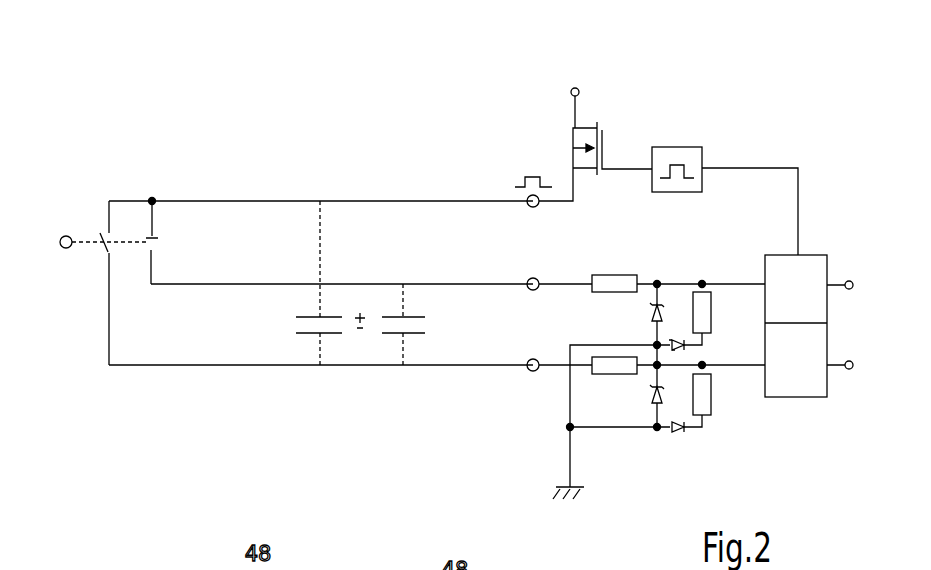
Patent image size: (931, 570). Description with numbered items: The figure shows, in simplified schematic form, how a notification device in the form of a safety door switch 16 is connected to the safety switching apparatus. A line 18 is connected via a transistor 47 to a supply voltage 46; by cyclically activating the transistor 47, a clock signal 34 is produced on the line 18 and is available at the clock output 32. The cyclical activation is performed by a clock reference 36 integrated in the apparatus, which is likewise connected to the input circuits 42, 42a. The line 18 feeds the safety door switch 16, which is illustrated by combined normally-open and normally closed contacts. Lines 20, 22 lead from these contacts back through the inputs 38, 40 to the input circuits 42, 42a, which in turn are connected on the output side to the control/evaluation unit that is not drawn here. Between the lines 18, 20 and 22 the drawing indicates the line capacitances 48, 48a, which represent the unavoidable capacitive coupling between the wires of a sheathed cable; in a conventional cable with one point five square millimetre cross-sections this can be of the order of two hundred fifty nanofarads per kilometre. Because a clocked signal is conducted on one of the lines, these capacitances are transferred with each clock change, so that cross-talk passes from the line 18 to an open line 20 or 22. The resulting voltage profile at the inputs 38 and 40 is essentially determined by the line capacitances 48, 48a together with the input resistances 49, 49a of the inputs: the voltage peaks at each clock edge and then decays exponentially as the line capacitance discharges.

The safety door switch 16 is at (98, 260).
The line 18 is at (241, 201).
The line 20 is at (200, 284).
The line 22 is at (183, 365).
The clock output 32 is at (537, 206).
The clock signal 34 is at (525, 177).
The clock reference 36 is at (683, 147).
The input 38 is at (528, 279).
The input 40 is at (530, 371).
The input circuit 42 is at (800, 373).
The input circuit 42a is at (805, 268).
The supply voltage 46 is at (575, 87).
The transistor 47 is at (592, 125).
The line capacitance 48 is at (333, 333).
The line capacitance 48a is at (410, 333).
The input resistance 49 is at (625, 275).
The input resistance 49a is at (607, 373).